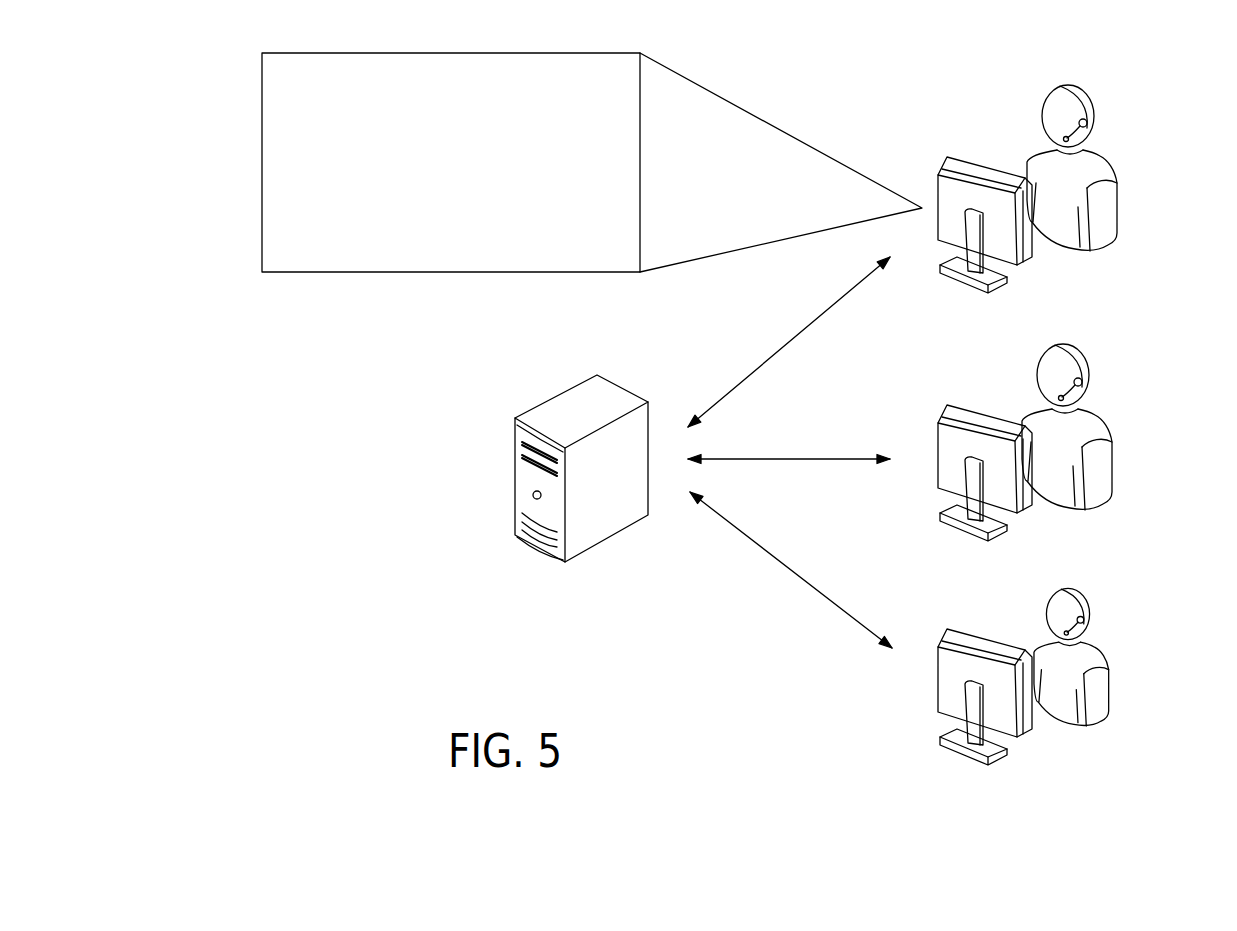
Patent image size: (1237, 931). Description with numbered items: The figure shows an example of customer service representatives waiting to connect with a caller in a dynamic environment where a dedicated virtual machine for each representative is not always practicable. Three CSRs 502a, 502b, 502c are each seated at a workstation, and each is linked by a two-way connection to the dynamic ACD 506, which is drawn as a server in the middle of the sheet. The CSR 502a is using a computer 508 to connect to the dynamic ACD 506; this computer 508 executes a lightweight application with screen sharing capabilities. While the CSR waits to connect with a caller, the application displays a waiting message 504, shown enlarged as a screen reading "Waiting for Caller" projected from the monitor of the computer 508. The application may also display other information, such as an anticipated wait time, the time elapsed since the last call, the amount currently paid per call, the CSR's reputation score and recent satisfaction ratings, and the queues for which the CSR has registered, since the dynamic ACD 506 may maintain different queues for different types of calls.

The CSR 502a is at (1030, 178).
The CSR 502b is at (1104, 346).
The CSR 502c is at (1141, 619).
The waiting message 504 is at (262, 84).
The dynamic ACD 506 is at (543, 402).
The computer 508 is at (940, 186).